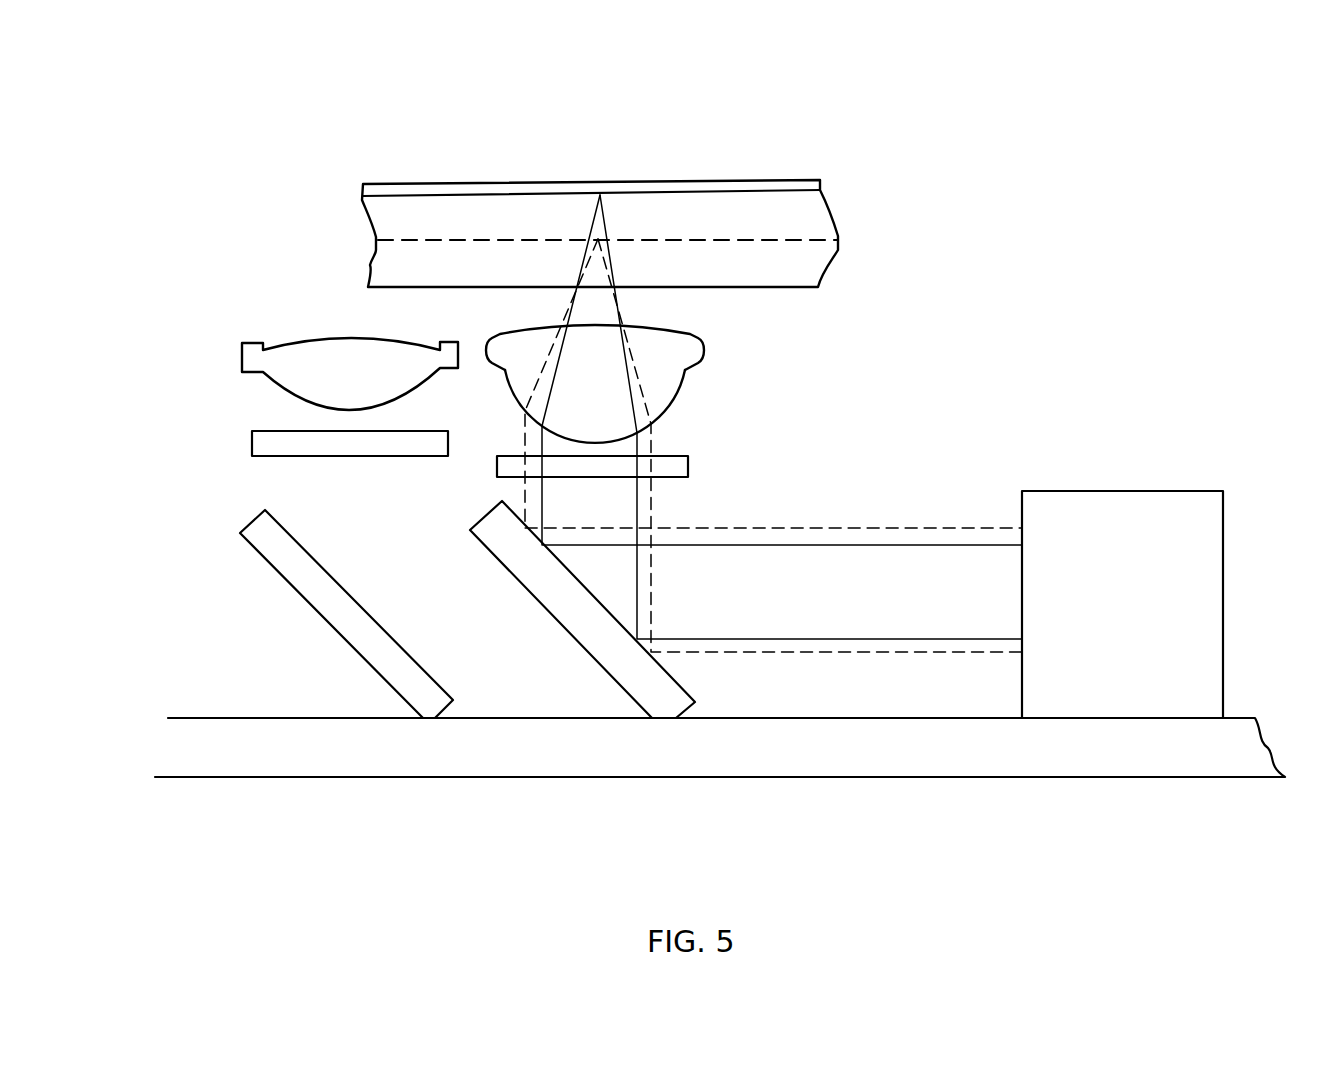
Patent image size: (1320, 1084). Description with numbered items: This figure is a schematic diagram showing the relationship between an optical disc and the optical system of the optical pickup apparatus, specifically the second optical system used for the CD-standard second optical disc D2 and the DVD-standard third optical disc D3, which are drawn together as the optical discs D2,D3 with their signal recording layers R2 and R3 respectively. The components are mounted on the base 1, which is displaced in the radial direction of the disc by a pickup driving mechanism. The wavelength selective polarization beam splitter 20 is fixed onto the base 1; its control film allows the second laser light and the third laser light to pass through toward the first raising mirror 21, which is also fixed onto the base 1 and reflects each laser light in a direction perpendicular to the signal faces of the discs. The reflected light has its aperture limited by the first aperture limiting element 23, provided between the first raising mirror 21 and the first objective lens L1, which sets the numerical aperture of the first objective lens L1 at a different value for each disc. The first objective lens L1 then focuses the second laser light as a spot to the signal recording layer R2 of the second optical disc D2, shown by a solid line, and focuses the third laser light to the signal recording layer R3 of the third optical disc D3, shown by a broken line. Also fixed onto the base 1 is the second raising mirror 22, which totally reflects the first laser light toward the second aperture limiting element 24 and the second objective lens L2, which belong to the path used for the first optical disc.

The base 1 is at (945, 768).
The wavelength selective polarization beam splitter 20 is at (1168, 515).
The first raising mirror 21 is at (600, 637).
The second raising mirror 22 is at (365, 643).
The first aperture limiting element 23 is at (677, 465).
The second aperture limiting element 24 is at (265, 442).
The first objective lens L1 is at (664, 368).
The second objective lens L2 is at (300, 352).
The signal recording layer R2 is at (762, 190).
The signal recording layer R3 is at (788, 240).
The second and third optical discs D2,D3 is at (677, 233).
The second optical disc D2 is at (600, 233).
The third optical disc D3 is at (828, 213).